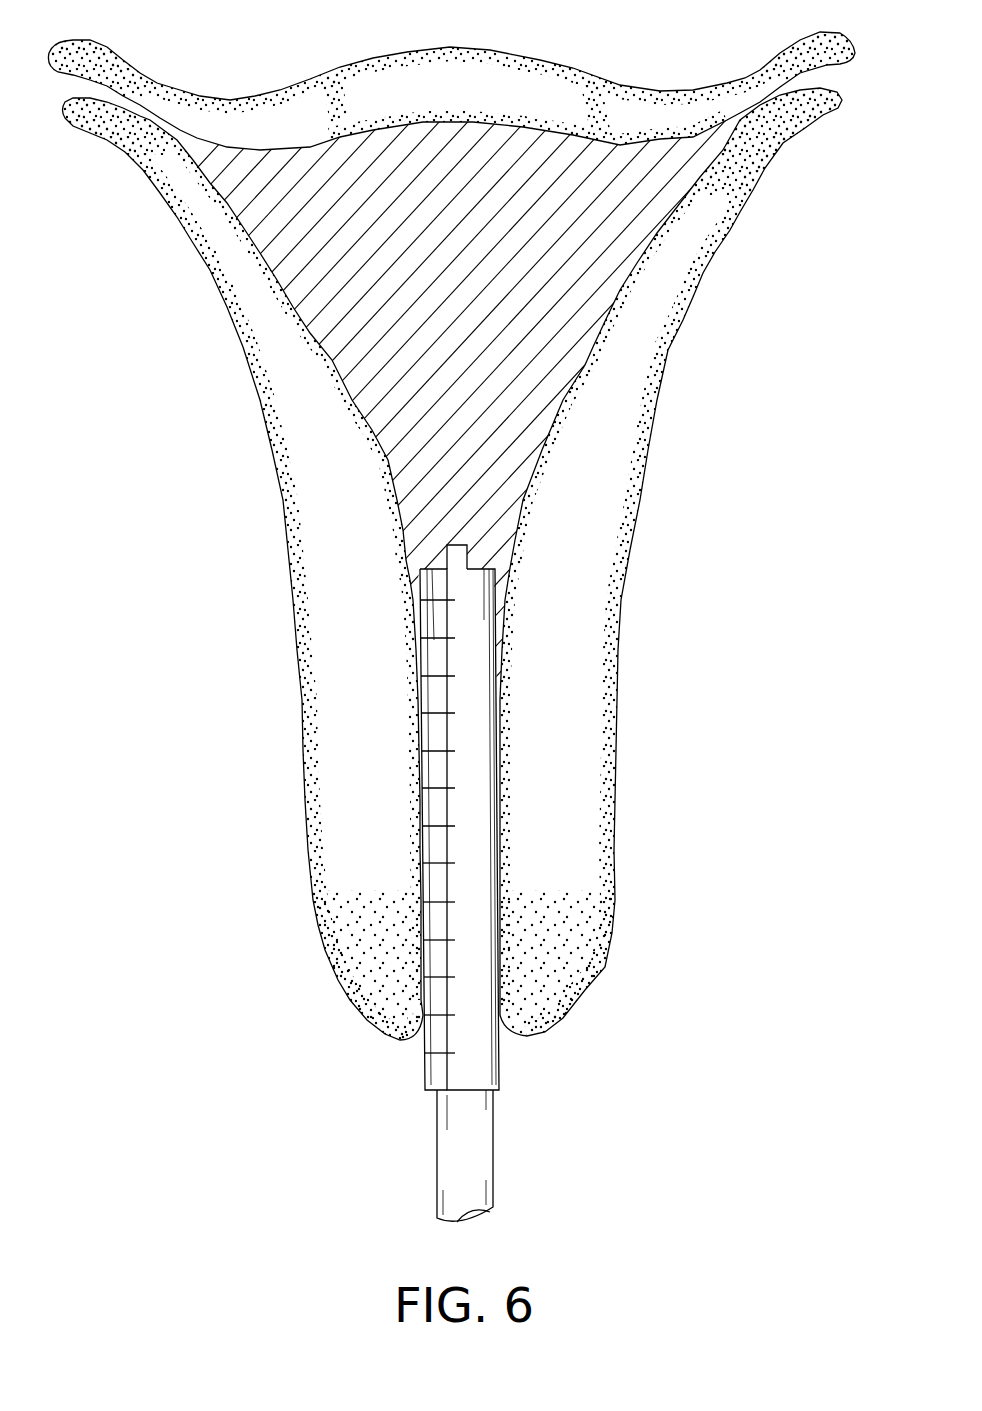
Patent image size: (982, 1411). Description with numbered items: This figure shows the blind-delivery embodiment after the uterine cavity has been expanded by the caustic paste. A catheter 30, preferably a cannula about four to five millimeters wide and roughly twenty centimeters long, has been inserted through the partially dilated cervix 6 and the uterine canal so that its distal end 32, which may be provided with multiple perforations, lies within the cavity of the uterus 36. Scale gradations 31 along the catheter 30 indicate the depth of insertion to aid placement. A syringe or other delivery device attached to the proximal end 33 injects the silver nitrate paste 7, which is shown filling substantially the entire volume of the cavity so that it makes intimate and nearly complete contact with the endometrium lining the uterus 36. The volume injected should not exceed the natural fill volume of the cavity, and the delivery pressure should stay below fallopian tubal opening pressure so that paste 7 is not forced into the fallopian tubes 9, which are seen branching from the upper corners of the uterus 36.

The cervix 6 is at (553, 968).
The silver nitrate paste 7 is at (525, 305).
The fallopian tubes 9 is at (140, 107).
The catheter 30 is at (500, 1055).
The scale gradations 31 is at (450, 1053).
The distal end 32 is at (487, 567).
The proximal end 33 is at (497, 1093).
The uterus 36 is at (783, 143).